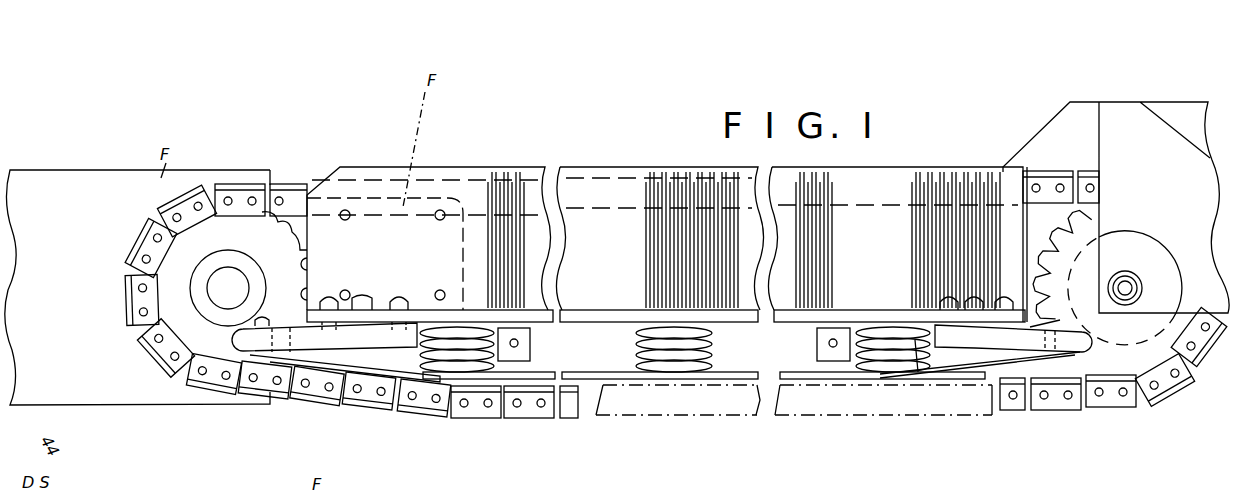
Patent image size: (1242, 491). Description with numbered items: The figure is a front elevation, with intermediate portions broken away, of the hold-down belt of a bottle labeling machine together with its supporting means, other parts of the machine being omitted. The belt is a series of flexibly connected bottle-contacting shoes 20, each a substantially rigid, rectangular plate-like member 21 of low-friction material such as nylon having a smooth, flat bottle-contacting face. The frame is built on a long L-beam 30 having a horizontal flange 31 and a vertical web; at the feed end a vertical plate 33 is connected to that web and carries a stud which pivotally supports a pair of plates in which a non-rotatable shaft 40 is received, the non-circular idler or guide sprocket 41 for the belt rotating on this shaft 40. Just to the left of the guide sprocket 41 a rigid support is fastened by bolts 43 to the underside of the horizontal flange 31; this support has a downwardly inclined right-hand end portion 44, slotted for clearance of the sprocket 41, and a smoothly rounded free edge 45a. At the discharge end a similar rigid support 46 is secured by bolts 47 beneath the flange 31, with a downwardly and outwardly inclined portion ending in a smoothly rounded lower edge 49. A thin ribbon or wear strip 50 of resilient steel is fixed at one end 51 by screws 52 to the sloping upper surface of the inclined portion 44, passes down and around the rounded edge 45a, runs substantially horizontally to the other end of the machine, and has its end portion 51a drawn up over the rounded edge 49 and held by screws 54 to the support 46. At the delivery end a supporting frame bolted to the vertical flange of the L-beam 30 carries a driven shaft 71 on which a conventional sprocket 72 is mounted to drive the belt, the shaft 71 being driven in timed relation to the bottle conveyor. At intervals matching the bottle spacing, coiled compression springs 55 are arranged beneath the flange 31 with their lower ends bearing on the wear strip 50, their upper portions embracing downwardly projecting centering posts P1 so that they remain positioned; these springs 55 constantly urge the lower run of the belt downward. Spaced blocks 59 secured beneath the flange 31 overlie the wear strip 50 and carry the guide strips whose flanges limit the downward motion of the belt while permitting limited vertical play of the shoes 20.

The bottle-contacting elements (shoes) 20 is at (1058, 395).
The plate-like member 21 is at (1148, 400).
The L-beam 30 is at (587, 172).
The horizontal flange 31 is at (583, 318).
The vertical plate 33 is at (1165, 105).
The non-rotatable shaft 40 is at (1133, 288).
The idler or guide sprocket 41 is at (1083, 240).
The bolts 43 is at (942, 300).
The downwardly inclined right-hand end portion 44 is at (985, 340).
The smoothly rounded free edge 45a is at (1088, 346).
The rigid support 46 is at (352, 342).
The bolts 47 is at (372, 305).
The smoothly rounded lower edge 49 is at (218, 238).
The wear strip (ribbon) 50 is at (745, 373).
The end of wear strip 51 is at (1035, 325).
The end portion of wear strip 51a is at (262, 326).
The screws 52 is at (1030, 327).
The screws 54 is at (282, 322).
The coiled compression springs 55 is at (430, 410).
The blocks (spacer blocks) 59 is at (515, 350).
The driven shaft 71 is at (232, 282).
The sprocket 72 is at (276, 250).
The centering posts P1 is at (917, 338).